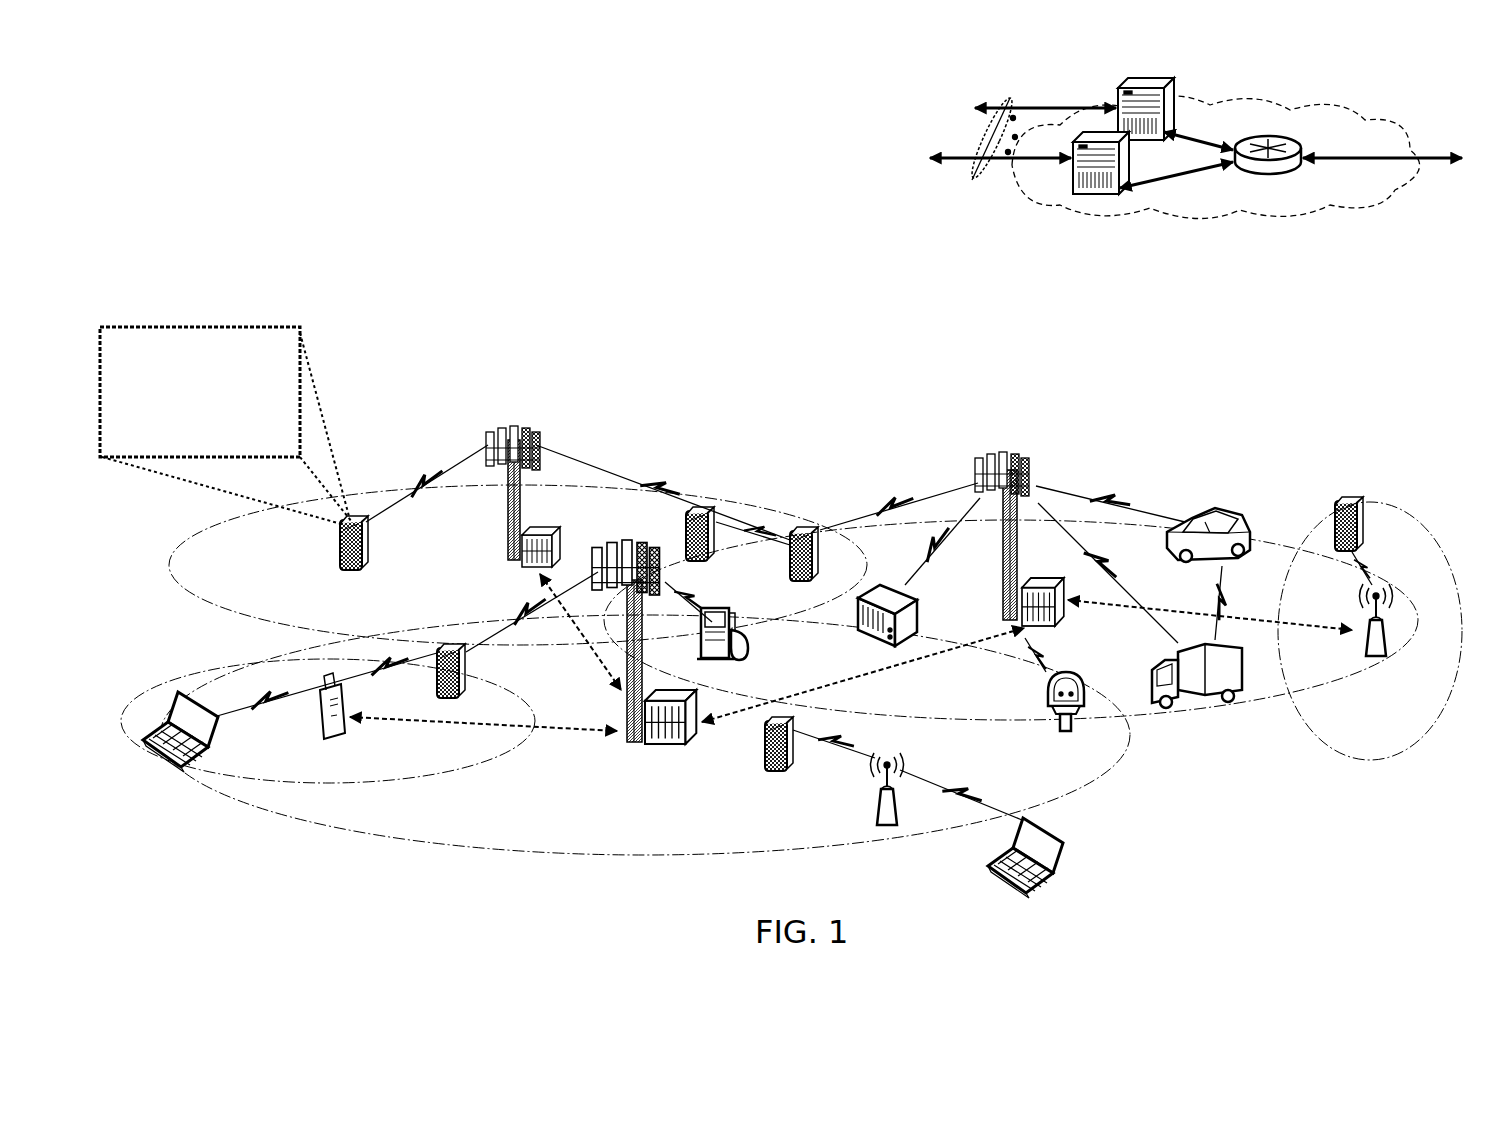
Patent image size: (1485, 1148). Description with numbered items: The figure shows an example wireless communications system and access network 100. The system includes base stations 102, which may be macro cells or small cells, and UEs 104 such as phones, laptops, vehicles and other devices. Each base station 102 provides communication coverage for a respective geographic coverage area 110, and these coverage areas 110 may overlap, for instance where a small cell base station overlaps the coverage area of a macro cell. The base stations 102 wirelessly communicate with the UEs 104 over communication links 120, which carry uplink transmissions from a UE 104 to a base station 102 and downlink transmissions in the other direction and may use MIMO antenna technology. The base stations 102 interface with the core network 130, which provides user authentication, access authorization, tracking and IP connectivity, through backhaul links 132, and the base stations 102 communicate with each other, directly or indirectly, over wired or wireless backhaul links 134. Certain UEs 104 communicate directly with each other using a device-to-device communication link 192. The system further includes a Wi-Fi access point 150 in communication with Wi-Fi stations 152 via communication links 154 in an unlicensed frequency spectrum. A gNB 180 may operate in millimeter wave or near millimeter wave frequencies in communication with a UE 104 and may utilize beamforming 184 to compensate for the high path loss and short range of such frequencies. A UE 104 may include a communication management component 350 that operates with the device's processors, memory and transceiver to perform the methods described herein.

The access network 100 is at (198, 112).
The base station 102 is at (508, 532).
The UE 104 is at (362, 570).
The geographic coverage area 110 is at (220, 618).
The communication link 120 is at (420, 478).
The core network 130 is at (1235, 225).
The backhaul link 132 is at (970, 180).
The backhaul link 134 is at (585, 658).
The Wi-Fi access point 150 is at (885, 830).
The Wi-Fi station 152 is at (760, 745).
The communication link 154 is at (835, 740).
The gNB 180 is at (1395, 642).
The beamforming 184 is at (1372, 568).
The D2D communication link 192 is at (772, 540).
The communication management component 350 is at (226, 426).